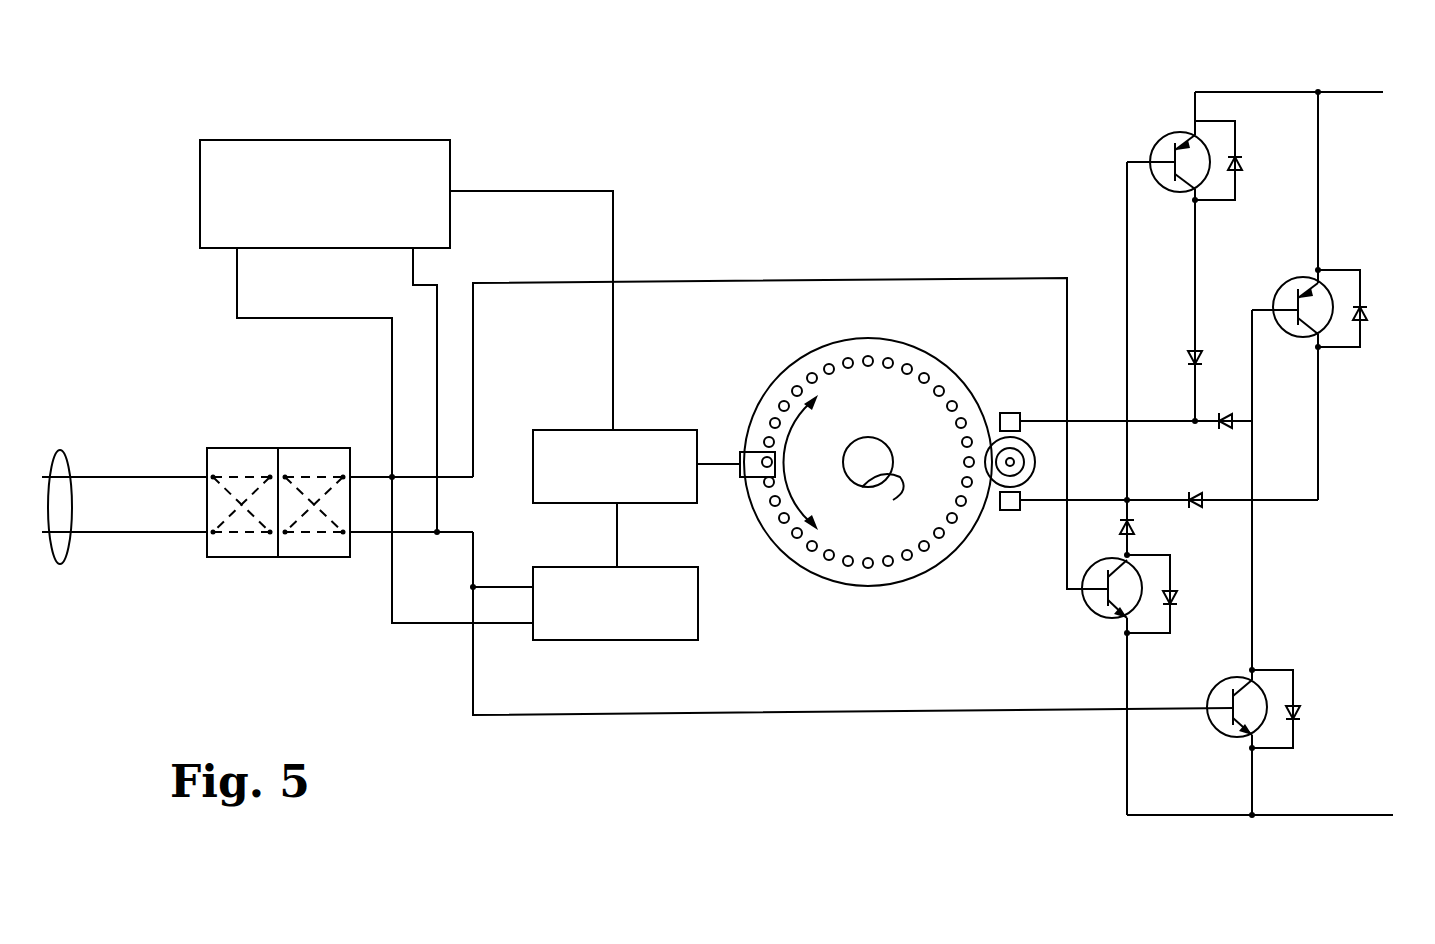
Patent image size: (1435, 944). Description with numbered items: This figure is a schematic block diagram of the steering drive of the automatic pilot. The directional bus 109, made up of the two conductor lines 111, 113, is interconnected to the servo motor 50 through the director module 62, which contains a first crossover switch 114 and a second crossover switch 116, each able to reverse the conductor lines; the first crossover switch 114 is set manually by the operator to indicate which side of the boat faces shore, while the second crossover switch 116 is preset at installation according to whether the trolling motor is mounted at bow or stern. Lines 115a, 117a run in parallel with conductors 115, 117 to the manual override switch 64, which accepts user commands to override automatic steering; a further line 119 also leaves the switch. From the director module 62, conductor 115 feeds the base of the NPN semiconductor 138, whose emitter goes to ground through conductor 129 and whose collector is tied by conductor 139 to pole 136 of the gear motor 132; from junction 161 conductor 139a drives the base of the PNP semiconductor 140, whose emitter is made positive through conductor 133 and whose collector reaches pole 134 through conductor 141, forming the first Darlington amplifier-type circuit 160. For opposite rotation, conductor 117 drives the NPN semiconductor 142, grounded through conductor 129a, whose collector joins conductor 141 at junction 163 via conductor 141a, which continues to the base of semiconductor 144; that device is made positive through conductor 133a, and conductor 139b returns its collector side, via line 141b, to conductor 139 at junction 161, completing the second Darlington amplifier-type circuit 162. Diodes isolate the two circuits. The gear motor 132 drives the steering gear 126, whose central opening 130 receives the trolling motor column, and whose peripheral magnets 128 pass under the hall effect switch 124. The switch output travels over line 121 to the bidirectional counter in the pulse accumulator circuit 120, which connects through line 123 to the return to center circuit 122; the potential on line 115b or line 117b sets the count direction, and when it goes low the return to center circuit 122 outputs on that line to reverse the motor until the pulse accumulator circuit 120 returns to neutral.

The servo motor 50 is at (774, 240).
The director module 62 is at (242, 432).
The manual override switch 64 is at (362, 138).
The directional bus 109 is at (59, 450).
The conductor line 111 is at (115, 468).
The conductor line 113 is at (130, 533).
The first crossover switch 114 is at (243, 559).
The second crossover switch 116 is at (317, 559).
The conductor 115 is at (475, 373).
The line 115a is at (305, 319).
The line 115b is at (432, 624).
The conductor 117 is at (458, 523).
The line 117a is at (412, 268).
The line 117b is at (500, 585).
The override inhibit line 119 is at (518, 190).
The pulse accumulator circuit 120 is at (640, 424).
The line 121 is at (713, 467).
The return to center circuit 122 is at (700, 602).
The accumulator output line 123 is at (617, 537).
The hall effect switch 124 is at (747, 452).
The steering gear 126 is at (820, 346).
The magnets 128 is at (889, 356).
The central opening 130 is at (873, 478).
The gear motor 132 is at (1012, 460).
The pole 134 is at (1004, 413).
The pole 136 is at (1008, 512).
The conductor 133 is at (1242, 91).
The conductor 133a is at (1320, 196).
The conductor 129 is at (1172, 813).
The conductor 129a is at (1255, 778).
The NPN semiconductor 138 is at (1095, 616).
The PNP semiconductor 140 is at (1155, 143).
The NPN semiconductor 142 is at (1215, 683).
The semiconductor 144 is at (1283, 292).
The conductor 139 is at (1088, 497).
The conductor 139a is at (1125, 201).
The conductor 139b is at (1320, 432).
The conductor 141 is at (1197, 237).
The conductor 141a is at (1253, 578).
The motor line branch 141b is at (1252, 357).
The Darlington amplifier-type circuit 160 is at (1047, 168).
The junction 161 is at (1140, 489).
The Darlington amplifier-type circuit 162 is at (1334, 625).
The junction 163 is at (1262, 430).